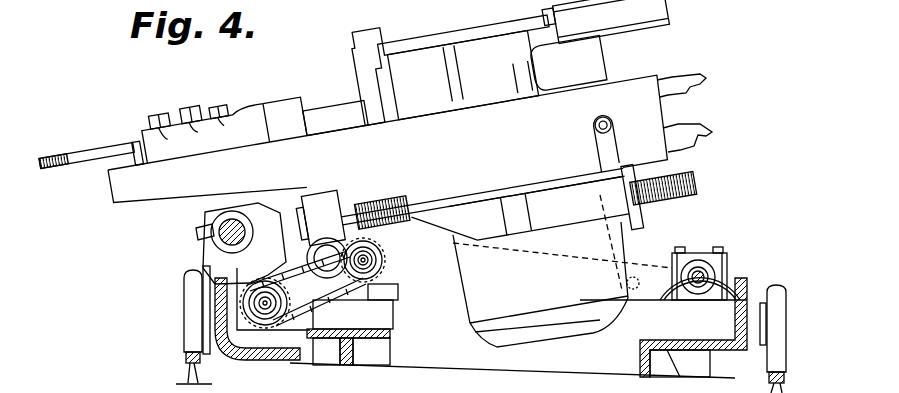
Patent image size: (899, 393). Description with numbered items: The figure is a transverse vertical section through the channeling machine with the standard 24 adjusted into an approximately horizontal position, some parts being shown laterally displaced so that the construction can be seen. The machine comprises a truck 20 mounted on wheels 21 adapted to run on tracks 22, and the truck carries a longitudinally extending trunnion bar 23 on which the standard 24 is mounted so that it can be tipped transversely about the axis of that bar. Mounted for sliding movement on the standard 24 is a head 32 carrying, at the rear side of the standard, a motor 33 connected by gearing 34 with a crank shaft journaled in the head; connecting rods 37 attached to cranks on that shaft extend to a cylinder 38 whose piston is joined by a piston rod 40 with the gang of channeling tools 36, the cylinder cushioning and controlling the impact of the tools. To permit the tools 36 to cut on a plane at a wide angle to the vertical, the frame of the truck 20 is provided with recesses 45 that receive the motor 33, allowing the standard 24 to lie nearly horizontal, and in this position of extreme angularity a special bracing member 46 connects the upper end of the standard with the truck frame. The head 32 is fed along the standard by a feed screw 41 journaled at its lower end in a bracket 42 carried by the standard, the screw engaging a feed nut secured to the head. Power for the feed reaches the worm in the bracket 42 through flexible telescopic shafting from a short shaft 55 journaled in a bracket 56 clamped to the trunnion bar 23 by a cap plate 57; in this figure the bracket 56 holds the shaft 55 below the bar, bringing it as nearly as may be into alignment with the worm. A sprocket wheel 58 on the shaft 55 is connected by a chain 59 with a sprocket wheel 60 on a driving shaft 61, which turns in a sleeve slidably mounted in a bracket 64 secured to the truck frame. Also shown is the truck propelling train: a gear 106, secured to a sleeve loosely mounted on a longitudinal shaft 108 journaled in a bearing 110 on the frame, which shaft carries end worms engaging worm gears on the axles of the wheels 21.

The truck 20 is at (731, 348).
The wheels 21 is at (193, 308).
The tracks 22 is at (198, 373).
The trunnion bar 23 is at (213, 224).
The standard 24 is at (148, 190).
The head 32 is at (600, 72).
The motor 33 is at (490, 305).
The gearing 34 is at (688, 183).
The channeling tools 36 is at (48, 153).
The connecting rods 37 is at (497, 28).
The cylinder 38 is at (365, 88).
The piston rod 40 is at (317, 117).
The feed screw 41 is at (409, 207).
The bracket 42 is at (340, 208).
The recesses or openings 45 is at (512, 378).
The special bracing member 46 is at (612, 152).
The short shaft 55 is at (268, 360).
The bracket 56 is at (267, 262).
The cap plate 57 is at (197, 235).
The sprocket wheel 58 is at (325, 367).
The chain 59 is at (353, 315).
The sprocket wheel 60 is at (372, 276).
The driving shaft 61 is at (374, 262).
The bracket 64 is at (393, 290).
The gear 106 is at (715, 247).
The shaft 108 is at (743, 262).
The bearing 110 is at (690, 250).